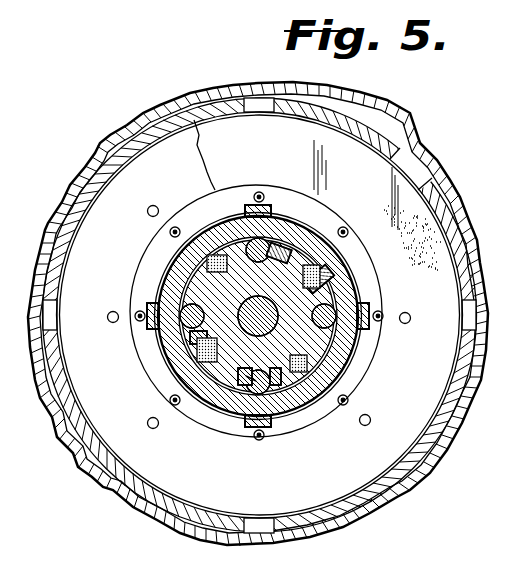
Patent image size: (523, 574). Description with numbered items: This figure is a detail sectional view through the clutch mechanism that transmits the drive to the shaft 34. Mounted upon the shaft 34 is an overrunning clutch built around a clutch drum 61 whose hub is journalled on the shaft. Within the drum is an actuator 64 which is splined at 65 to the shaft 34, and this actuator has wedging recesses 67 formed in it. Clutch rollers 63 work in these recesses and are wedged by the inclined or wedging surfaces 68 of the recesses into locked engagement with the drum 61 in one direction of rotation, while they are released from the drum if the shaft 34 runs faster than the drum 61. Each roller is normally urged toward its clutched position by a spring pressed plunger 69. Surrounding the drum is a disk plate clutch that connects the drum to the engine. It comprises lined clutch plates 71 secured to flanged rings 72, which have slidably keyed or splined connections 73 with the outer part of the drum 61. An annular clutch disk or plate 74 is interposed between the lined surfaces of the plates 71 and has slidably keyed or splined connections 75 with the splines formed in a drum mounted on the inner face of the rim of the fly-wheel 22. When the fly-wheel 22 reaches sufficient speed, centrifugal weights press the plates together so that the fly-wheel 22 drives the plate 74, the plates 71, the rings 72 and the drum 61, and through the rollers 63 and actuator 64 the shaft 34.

The fly-wheel 22 is at (258, 307).
The lined clutch plates 71 is at (75, 365).
The annular clutch disk or plate 74 is at (328, 139).
The splined connections 75 is at (289, 101).
The flanged rings 72 is at (143, 345).
The splined connections 73 is at (160, 330).
The shaft 34 is at (305, 325).
The clutch rollers 63 is at (302, 354).
The clutch drum 61 is at (340, 284).
The actuator 64 is at (308, 362).
The spline 65 is at (242, 367).
The wedging recesses 67 is at (227, 422).
The inclined or wedging surfaces 68 is at (214, 397).
The spring pressed plunger 69 is at (295, 414).